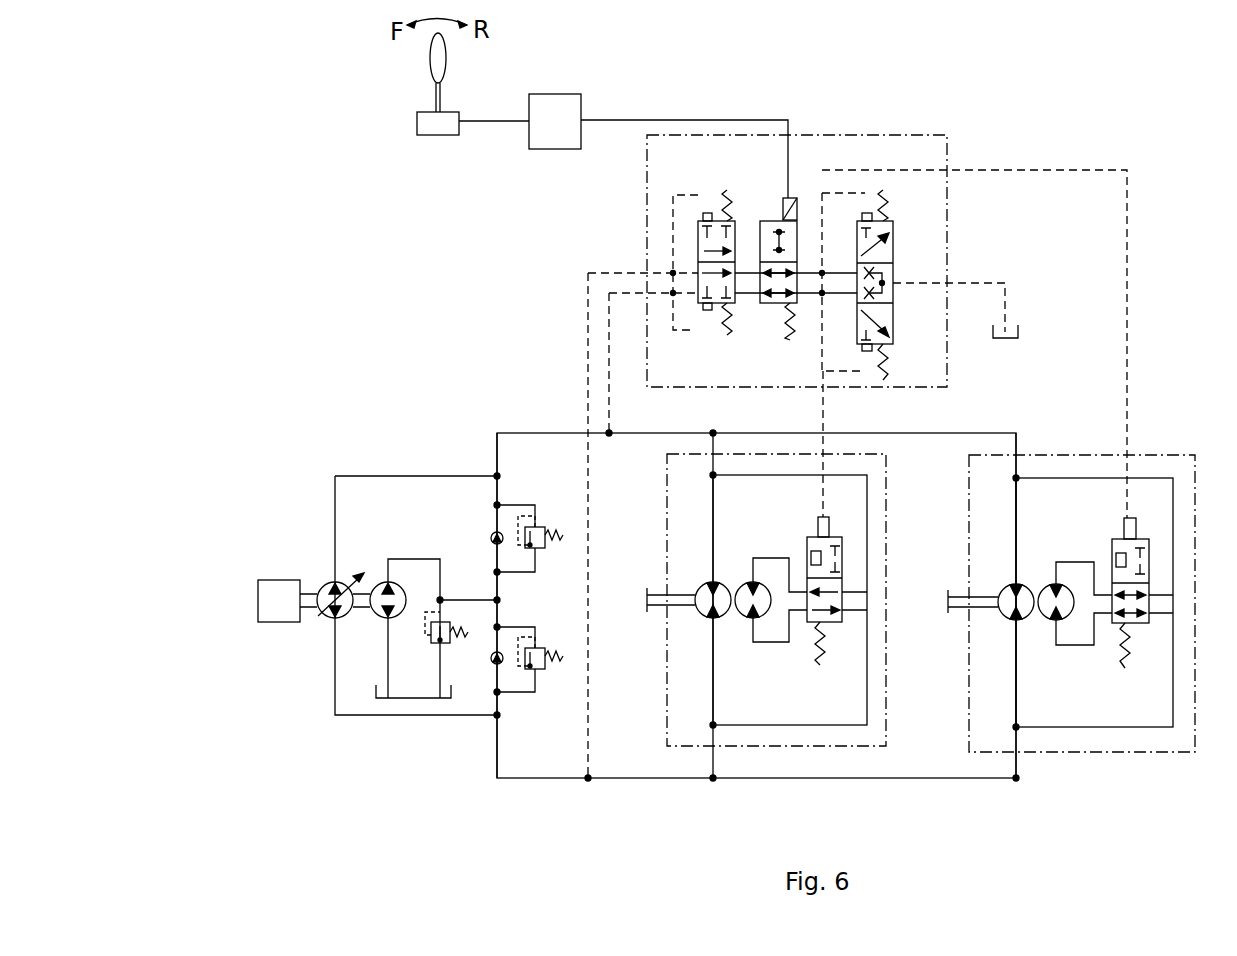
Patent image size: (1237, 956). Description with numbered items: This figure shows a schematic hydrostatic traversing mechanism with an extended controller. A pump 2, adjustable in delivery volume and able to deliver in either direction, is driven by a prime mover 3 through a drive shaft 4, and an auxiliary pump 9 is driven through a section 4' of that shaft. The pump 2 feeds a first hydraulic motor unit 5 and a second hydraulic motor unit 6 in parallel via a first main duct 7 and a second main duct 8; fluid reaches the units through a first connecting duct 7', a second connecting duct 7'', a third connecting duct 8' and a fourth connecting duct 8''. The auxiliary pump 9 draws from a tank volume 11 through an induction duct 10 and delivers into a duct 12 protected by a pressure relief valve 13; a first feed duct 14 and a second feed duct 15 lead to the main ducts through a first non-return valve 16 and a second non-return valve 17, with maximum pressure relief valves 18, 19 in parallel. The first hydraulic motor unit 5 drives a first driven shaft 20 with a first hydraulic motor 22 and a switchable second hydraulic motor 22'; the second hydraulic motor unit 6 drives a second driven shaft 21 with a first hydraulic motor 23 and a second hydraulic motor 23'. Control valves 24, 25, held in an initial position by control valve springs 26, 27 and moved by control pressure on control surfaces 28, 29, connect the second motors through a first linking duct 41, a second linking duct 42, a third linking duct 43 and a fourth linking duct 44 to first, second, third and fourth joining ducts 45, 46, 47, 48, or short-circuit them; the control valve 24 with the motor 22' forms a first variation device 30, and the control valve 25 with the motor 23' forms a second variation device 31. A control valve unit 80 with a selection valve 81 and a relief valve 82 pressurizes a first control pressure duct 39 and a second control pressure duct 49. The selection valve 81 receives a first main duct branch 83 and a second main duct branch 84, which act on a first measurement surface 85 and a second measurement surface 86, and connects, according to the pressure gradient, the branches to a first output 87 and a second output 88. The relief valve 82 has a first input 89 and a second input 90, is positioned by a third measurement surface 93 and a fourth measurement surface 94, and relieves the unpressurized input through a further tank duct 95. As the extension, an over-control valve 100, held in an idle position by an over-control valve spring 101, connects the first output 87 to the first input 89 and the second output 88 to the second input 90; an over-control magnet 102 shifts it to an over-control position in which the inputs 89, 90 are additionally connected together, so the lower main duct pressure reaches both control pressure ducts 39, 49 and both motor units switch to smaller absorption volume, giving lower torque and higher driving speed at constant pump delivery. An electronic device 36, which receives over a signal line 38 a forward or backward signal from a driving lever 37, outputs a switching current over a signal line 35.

The pump 2 is at (322, 617).
The prime mover 3 is at (258, 600).
The drive shaft 4 is at (309, 577).
The section of the drive shaft 4' is at (365, 629).
The first hydraulic motor unit 5 is at (1000, 752).
The second hydraulic motor unit 6 is at (688, 746).
The first main duct 7 is at (461, 630).
The first connecting duct 7' is at (1039, 627).
The second connecting duct 7'' is at (738, 623).
The second main duct 8 is at (719, 581).
The third connecting duct 8' is at (1033, 416).
The fourth connecting duct 8'' is at (740, 420).
The auxiliary pump 9 is at (378, 582).
The induction duct 10 is at (388, 676).
The tank volume 11 is at (408, 698).
The duct 12 is at (410, 559).
The pressure relief valve 13 is at (432, 643).
The first feed duct 14 is at (500, 607).
The second feed duct 15 is at (500, 490).
The first non-return valve 16 is at (495, 665).
The second non-return valve 17 is at (492, 535).
The maximum pressure relief valve 18 is at (542, 671).
The maximum pressure relief valve 19 is at (542, 550).
The first driven shaft 20 is at (955, 607).
The second driven shaft 21 is at (660, 605).
The first hydraulic motor 22 is at (1026, 640).
The second hydraulic motor 22' is at (1049, 566).
The first hydraulic motor 23 is at (721, 639).
The second hydraulic motor 23' is at (746, 565).
The control valve 24 is at (1157, 549).
The control valve 25 is at (850, 547).
The control valve spring 26 is at (1095, 698).
The control valve spring 27 is at (790, 698).
The control surface 28 is at (1132, 518).
The control surface 29 is at (828, 517).
The first variation device 30 is at (1095, 752).
The second variation device 31 is at (790, 748).
The signal line 35 is at (625, 120).
The electronic device 36 is at (557, 94).
The driving lever 37 is at (398, 113).
The signal line 38 is at (503, 122).
The first control pressure duct 39 is at (1127, 338).
The first linking duct 41 is at (1153, 727).
The second linking duct 42 is at (1067, 455).
The third linking duct 43 is at (840, 727).
The fourth linking duct 44 is at (785, 454).
The first joining duct 45 is at (1077, 645).
The second joining duct 46 is at (1077, 562).
The third joining duct 47 is at (772, 642).
The fourth joining duct 48 is at (772, 558).
The second control pressure duct 49 is at (823, 405).
The control valve unit 80 is at (923, 135).
The selection valve 81 is at (690, 240).
The relief valve 82 is at (908, 259).
The first main duct branch 83 is at (588, 333).
The second main duct branch 84 is at (609, 395).
The first measurement surface 85 is at (705, 213).
The second measurement surface 86 is at (707, 310).
The first output 87 is at (740, 262).
The second output 88 is at (738, 296).
The first input 89 is at (857, 266).
The second input 90 is at (857, 296).
The third measurement surface 93 is at (875, 213).
The fourth measurement surface 94 is at (883, 380).
The further tank duct 95 is at (1010, 302).
The over-control valve 100 is at (774, 197).
The over-control valve spring 101 is at (790, 338).
The over-control magnet 102 is at (795, 200).